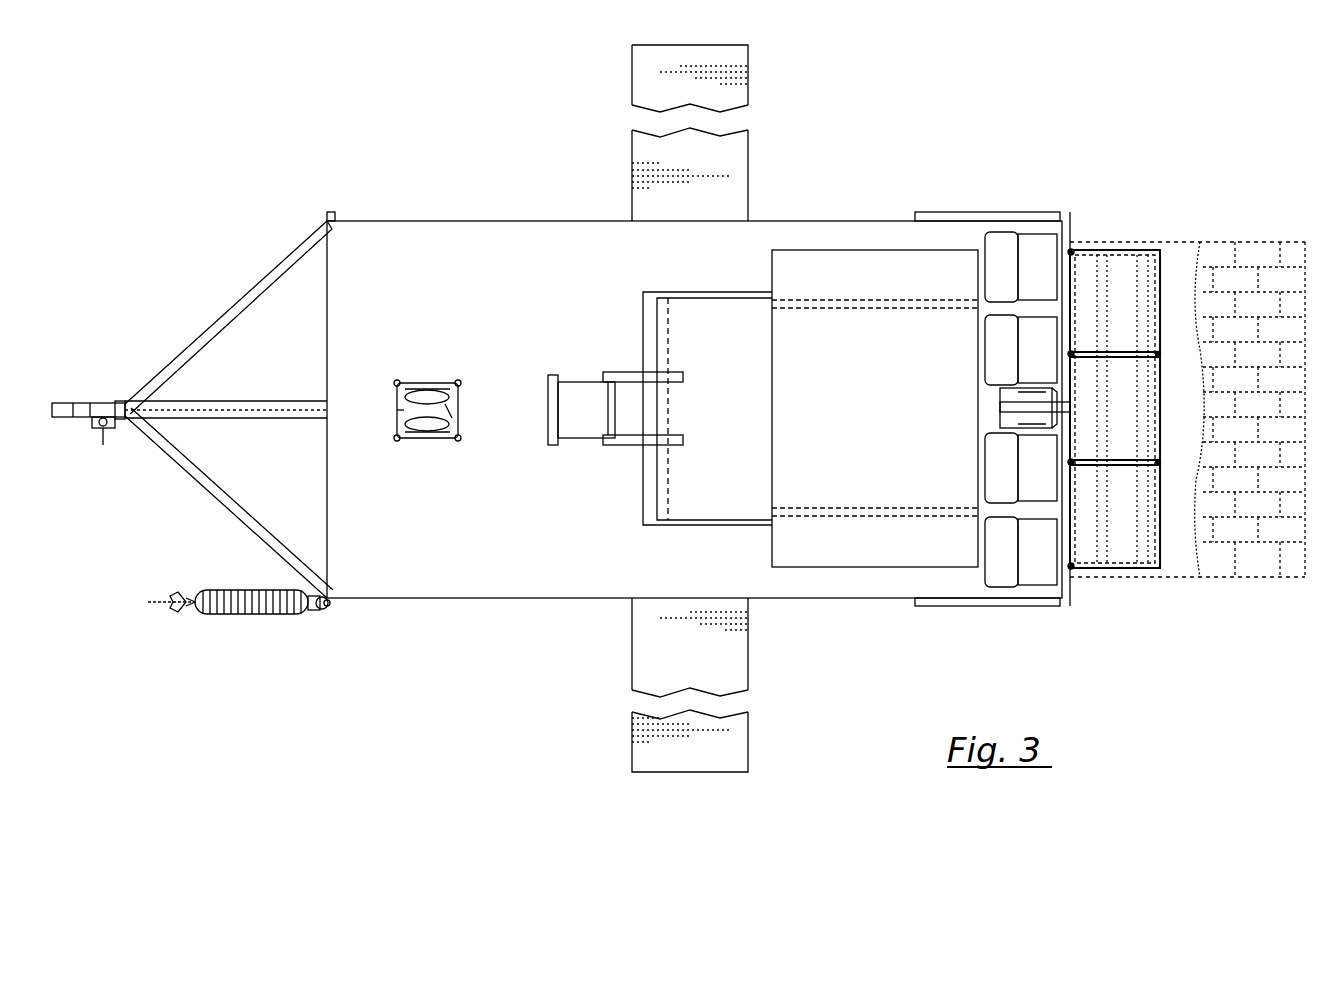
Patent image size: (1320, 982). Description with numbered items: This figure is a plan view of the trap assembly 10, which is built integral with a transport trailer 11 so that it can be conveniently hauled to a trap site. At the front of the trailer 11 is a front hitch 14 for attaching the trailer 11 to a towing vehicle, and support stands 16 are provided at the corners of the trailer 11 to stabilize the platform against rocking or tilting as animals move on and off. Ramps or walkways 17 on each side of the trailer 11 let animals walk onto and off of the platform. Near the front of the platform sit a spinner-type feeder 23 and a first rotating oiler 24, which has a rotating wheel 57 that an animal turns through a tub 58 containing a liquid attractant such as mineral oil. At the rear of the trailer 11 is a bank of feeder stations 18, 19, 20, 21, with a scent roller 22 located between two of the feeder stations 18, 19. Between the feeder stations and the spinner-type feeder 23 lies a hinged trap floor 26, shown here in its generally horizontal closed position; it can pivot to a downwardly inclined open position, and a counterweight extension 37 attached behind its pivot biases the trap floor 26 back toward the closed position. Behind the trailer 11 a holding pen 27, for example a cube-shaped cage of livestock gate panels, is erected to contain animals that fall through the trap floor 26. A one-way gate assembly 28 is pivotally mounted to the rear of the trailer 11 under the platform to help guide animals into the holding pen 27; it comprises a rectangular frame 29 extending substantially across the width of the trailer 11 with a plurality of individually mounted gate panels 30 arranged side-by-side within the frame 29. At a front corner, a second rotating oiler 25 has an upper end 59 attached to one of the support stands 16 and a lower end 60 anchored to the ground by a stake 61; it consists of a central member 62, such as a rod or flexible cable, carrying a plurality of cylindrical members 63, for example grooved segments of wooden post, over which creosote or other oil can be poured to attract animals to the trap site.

The trap assembly 10 is at (178, 149).
The transport trailer 11 is at (503, 240).
The front hitch 14 is at (66, 403).
The support stands 16 is at (375, 240).
The ramps or walkways 17 is at (735, 148).
The feeder station 18 is at (990, 352).
The feeder station 19 is at (990, 467).
The feeder station 20 is at (1005, 245).
The feeder station 21 is at (1003, 565).
The scent roller 22 is at (1003, 398).
The spinner-type feeder 23 is at (573, 388).
The first rotating oiler 24 is at (412, 385).
The second rotating oiler 25 is at (251, 655).
The hinged trap floor 26 is at (820, 545).
The holding pen 27 is at (1268, 262).
The one-way gate assembly 28 is at (1100, 265).
The rectangular frame 29 is at (1160, 265).
The gate panels 30 is at (1125, 275).
The counterweight extension 37 is at (690, 518).
The rotating wheel 57 is at (398, 413).
The tub 58 is at (445, 410).
The upper end 59 is at (322, 610).
The lower end 60 is at (175, 615).
The stake 61 is at (157, 600).
The central member 62 is at (186, 598).
The cylindrical members 63 is at (262, 615).